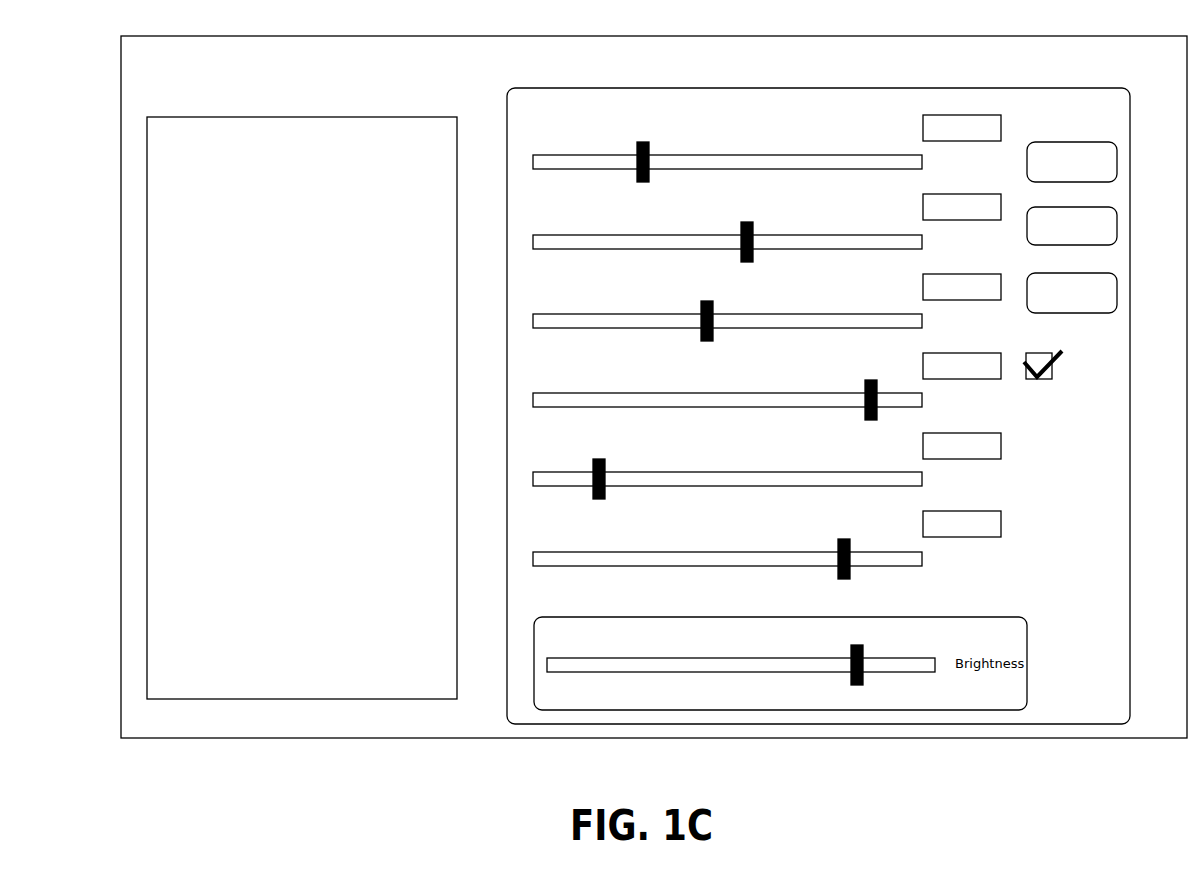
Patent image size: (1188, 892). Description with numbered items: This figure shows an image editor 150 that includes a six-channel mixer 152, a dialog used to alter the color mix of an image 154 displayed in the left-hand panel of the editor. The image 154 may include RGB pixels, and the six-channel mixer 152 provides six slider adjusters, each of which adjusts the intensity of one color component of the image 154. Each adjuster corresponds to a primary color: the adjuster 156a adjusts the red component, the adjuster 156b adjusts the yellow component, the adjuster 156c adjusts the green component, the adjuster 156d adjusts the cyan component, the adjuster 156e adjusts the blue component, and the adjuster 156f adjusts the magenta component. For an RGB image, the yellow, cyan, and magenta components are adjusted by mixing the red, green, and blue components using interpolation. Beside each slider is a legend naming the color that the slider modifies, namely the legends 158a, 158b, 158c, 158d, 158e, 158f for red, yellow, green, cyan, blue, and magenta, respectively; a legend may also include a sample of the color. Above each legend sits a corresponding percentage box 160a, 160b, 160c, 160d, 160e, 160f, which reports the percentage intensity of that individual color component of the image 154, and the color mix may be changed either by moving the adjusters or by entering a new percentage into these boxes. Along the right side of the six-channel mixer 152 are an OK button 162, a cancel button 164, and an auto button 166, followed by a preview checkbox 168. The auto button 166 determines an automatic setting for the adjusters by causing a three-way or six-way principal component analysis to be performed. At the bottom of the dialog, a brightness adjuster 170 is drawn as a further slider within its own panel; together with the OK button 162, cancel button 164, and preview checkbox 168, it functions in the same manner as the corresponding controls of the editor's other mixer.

The image editor 150 is at (248, 25).
The six-channel mixer 152 is at (690, 88).
The image 154 is at (320, 117).
The adjuster 156a is at (750, 155).
The adjuster 156b is at (660, 235).
The adjuster 156c is at (785, 314).
The adjuster 156d is at (745, 393).
The adjuster 156e is at (703, 472).
The adjuster 156f is at (703, 552).
The legend 158a is at (974, 161).
The legend 158b is at (985, 233).
The legend 158c is at (985, 318).
The legend 158d is at (980, 398).
The legend 158e is at (973, 473).
The legend 158f is at (1000, 558).
The percentage box 160a is at (923, 126).
The percentage box 160b is at (923, 206).
The percentage box 160c is at (923, 286).
The percentage box 160d is at (923, 366).
The percentage box 160e is at (923, 446).
The percentage box 160f is at (923, 522).
The OK button 162 is at (1117, 163).
The cancel button 164 is at (1117, 228).
The auto button 166 is at (1117, 294).
The preview checkbox 168 is at (1050, 380).
The brightness adjuster 170 is at (753, 658).